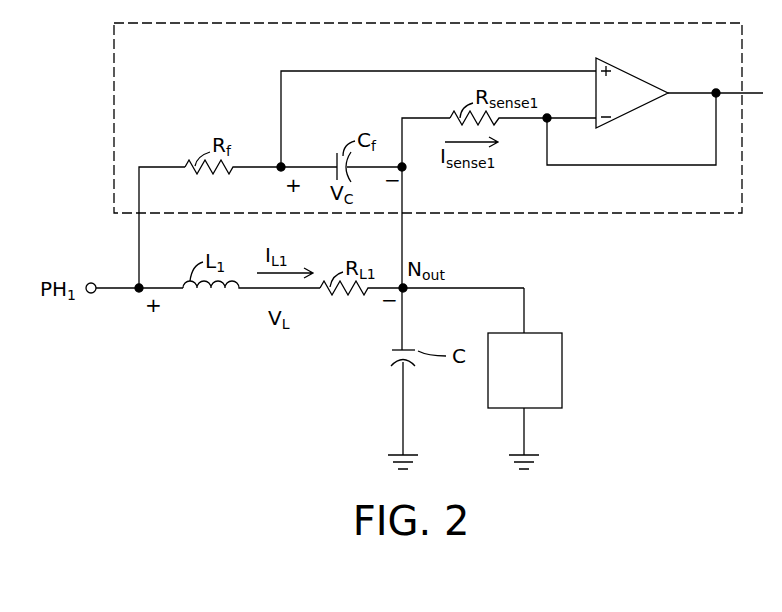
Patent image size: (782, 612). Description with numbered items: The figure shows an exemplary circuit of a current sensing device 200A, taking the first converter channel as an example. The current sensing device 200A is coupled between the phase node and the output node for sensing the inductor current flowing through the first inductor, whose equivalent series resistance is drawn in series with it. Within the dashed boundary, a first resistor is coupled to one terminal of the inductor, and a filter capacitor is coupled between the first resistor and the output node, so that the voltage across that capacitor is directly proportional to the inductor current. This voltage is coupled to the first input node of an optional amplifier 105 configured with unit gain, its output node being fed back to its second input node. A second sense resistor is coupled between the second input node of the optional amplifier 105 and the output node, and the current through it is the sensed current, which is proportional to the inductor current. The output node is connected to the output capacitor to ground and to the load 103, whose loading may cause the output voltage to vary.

The current sensing device 200A is at (113, 120).
The optional amplifier 105 is at (633, 72).
The load 103 is at (562, 372).